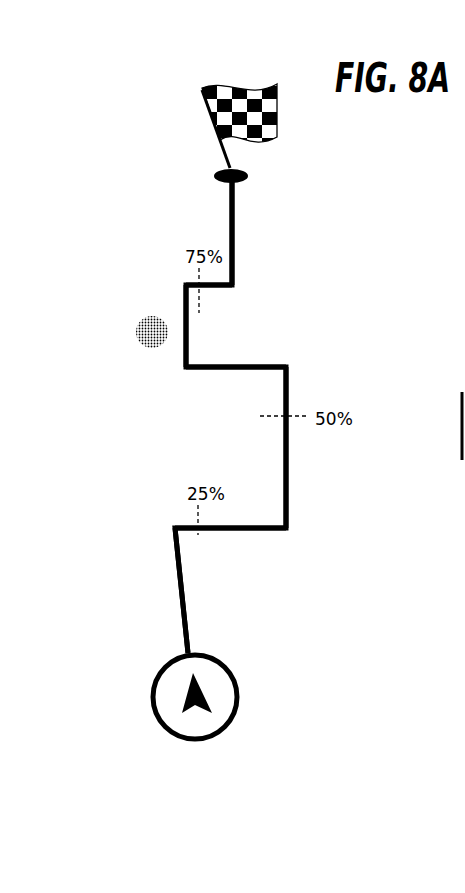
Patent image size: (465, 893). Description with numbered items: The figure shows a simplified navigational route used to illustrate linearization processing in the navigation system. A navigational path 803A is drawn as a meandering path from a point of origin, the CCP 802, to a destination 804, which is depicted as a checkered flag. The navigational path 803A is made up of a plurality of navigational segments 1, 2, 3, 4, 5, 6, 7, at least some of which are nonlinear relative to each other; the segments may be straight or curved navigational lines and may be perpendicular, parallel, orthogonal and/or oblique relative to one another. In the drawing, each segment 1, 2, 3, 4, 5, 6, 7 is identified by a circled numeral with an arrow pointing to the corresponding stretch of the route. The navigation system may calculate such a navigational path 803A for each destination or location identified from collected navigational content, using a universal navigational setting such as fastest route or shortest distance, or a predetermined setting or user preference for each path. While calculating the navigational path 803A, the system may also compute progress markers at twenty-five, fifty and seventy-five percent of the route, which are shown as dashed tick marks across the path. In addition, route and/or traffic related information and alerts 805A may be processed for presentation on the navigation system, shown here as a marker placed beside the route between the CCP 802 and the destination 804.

The navigational segment 1 is at (190, 618).
The navigational segment 2 is at (240, 531).
The navigational segment 3 is at (289, 488).
The navigational segment 4 is at (217, 370).
The navigational segment 5 is at (183, 306).
The navigational segment 6 is at (219, 289).
The navigational segment 7 is at (229, 222).
The CCP 802 is at (237, 725).
The navigational path 803A is at (235, 244).
The destination 804 is at (222, 85).
The route and/or traffic related information and alert 805A is at (135, 344).